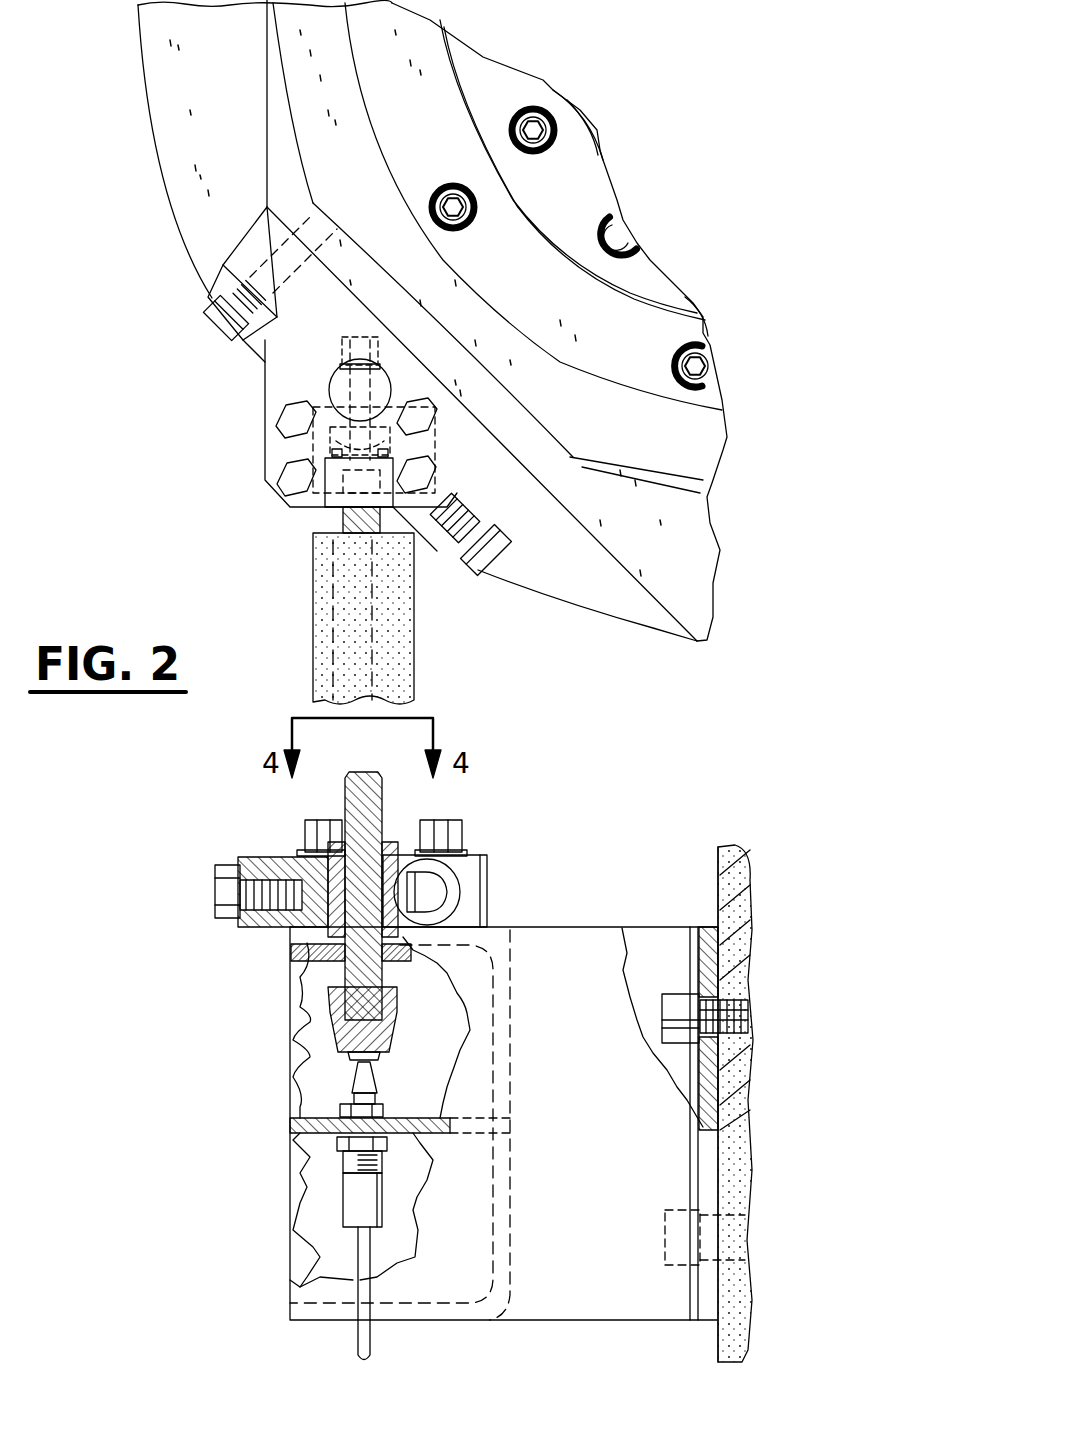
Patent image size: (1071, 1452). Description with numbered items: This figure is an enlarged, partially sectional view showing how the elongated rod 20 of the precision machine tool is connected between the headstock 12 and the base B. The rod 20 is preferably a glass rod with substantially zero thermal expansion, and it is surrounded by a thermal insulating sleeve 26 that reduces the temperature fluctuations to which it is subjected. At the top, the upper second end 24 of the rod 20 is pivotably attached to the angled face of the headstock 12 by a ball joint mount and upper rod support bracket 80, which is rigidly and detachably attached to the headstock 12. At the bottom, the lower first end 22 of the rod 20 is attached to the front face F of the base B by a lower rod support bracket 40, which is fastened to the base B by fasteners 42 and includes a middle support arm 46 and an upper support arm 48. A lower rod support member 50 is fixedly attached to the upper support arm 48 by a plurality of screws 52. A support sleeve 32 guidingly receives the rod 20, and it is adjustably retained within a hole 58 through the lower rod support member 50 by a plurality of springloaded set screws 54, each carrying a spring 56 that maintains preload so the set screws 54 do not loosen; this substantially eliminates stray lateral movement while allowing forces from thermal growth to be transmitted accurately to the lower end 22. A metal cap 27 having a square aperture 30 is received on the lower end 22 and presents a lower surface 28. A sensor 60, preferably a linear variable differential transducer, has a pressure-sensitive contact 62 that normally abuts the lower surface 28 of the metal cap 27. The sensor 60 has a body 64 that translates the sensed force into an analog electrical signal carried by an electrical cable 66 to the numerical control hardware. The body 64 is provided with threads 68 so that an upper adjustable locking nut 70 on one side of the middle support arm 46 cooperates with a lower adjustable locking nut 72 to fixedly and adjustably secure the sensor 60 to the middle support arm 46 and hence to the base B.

The headstock 12 is at (165, 154).
The ball joint mount and upper rod support bracket 80 is at (300, 367).
The second end 24 is at (343, 520).
The elongated rod 20 is at (312, 606).
The thermal insulating sleeve 26 is at (414, 650).
The screws 52 is at (453, 818).
The lower rod support member 50 is at (485, 858).
The springloaded set screws 54 is at (215, 892).
The springs 56 is at (297, 877).
The support sleeve 32 is at (293, 952).
The first end 22 is at (310, 973).
The metal cap 27 is at (330, 1010).
The lower surface 28 is at (350, 1057).
The sensor 60 is at (320, 1084).
The pressure-sensitive contact 62 is at (373, 1060).
The upper adjustable locking nut 70 is at (386, 1143).
The middle support arm 46 is at (290, 1130).
The lower adjustable locking nut 72 is at (387, 1153).
The threads 68 is at (360, 1154).
The body 64 is at (357, 1188).
The electrical cable 66 is at (355, 1258).
The hole 58 is at (382, 950).
The square aperture 30 is at (390, 1016).
The upper support arm 48 is at (512, 967).
The fasteners 42 is at (662, 994).
The lower rod support bracket 40 is at (612, 1321).
The front face F is at (718, 877).
The base B is at (740, 940).